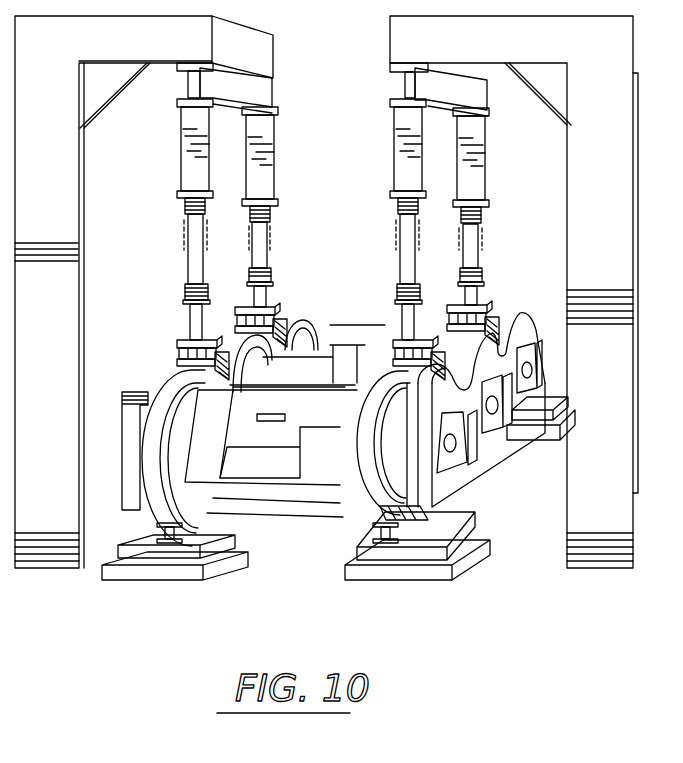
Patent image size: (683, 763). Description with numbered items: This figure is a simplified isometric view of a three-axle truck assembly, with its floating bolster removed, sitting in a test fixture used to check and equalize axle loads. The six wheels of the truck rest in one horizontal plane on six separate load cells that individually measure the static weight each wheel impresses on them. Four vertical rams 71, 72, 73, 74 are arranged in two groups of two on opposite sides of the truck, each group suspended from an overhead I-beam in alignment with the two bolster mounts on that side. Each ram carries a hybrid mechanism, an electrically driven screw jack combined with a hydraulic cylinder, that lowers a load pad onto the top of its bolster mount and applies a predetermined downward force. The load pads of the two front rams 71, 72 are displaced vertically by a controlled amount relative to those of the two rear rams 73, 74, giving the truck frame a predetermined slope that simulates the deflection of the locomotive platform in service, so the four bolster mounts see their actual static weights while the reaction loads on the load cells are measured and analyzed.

The front ram 71 is at (408, 318).
The front ram 72 is at (192, 322).
The rear ram 73 is at (468, 292).
The rear ram 74 is at (257, 293).